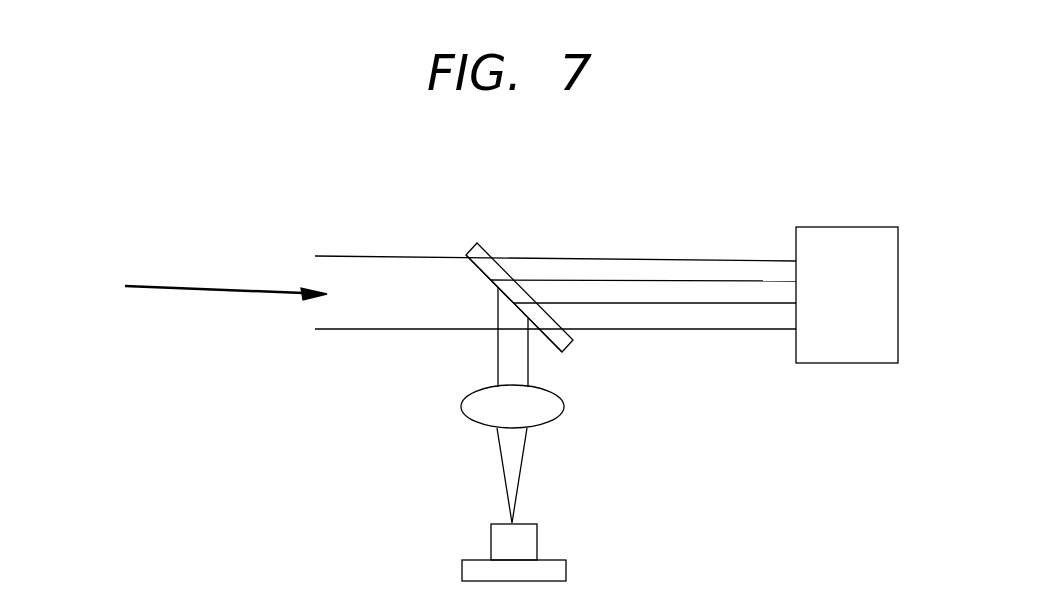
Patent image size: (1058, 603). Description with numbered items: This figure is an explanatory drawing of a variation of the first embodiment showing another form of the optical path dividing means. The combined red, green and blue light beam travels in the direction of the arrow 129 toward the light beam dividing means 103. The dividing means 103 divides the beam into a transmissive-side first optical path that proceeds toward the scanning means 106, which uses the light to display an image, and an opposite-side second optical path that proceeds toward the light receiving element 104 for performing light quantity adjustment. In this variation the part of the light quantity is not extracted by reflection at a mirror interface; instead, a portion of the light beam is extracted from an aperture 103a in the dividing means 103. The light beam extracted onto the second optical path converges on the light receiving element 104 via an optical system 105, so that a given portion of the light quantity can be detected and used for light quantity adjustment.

The arrow 129 is at (236, 290).
The light beam dividing means 103 is at (468, 244).
The aperture 103a is at (570, 338).
The scanning means 106 is at (852, 238).
The optical system 105 is at (545, 425).
The light receiving element 104 is at (537, 543).